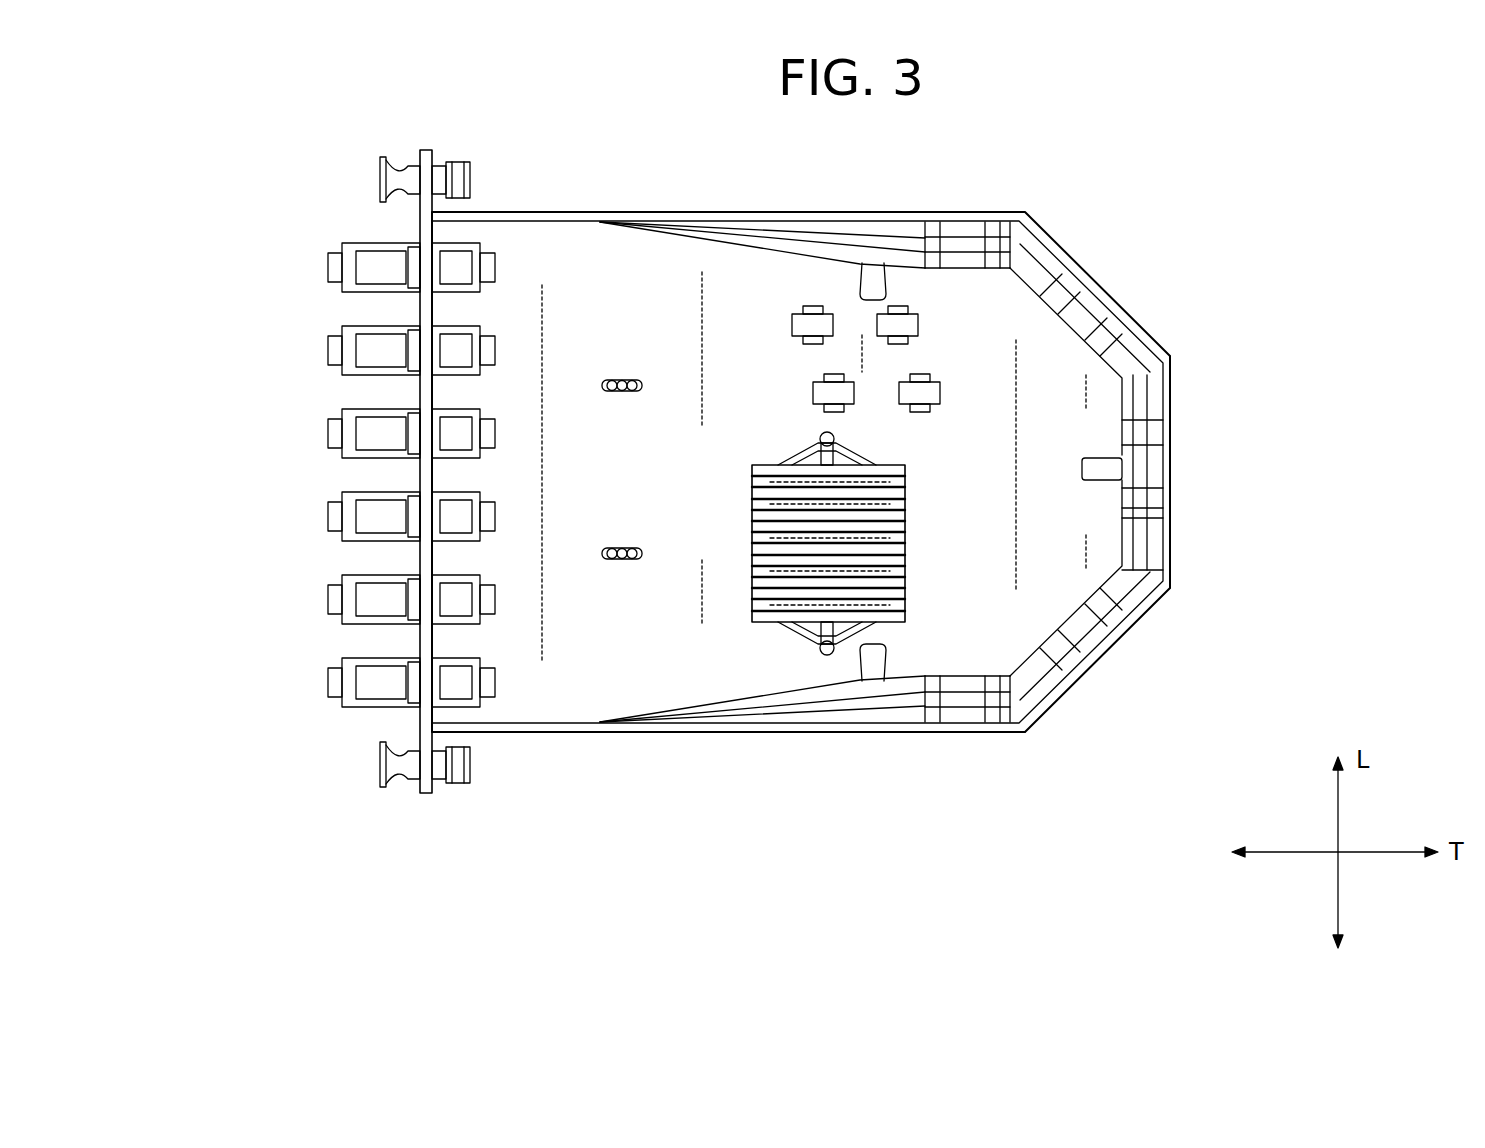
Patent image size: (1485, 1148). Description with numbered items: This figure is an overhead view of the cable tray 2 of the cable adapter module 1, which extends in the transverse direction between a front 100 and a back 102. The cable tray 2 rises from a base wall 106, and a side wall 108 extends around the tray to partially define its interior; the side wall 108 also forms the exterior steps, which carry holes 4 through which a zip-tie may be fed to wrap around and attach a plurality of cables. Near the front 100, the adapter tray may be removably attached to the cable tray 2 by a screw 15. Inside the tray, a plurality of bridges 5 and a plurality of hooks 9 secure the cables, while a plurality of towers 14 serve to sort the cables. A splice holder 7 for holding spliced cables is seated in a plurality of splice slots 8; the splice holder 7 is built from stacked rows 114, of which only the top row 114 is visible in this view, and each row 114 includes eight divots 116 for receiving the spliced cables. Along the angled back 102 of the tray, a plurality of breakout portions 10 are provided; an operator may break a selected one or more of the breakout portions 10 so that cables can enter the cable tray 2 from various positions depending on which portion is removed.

The cable adapter module 1 is at (1215, 226).
The cable tray 2 is at (798, 740).
The holes 4 is at (936, 662).
The bridges 5 is at (940, 389).
The splice holder 7 is at (862, 528).
The splice slots 8 is at (814, 436).
The hooks 9 is at (856, 292).
The breakout portions 10 is at (1148, 322).
The towers 14 is at (634, 374).
The screw 15 is at (482, 178).
The front 100 is at (232, 501).
The back 102 is at (1333, 372).
The base wall 106 is at (612, 452).
The side wall 108 is at (681, 738).
The rows 114 is at (748, 450).
The divots 116 is at (765, 513).